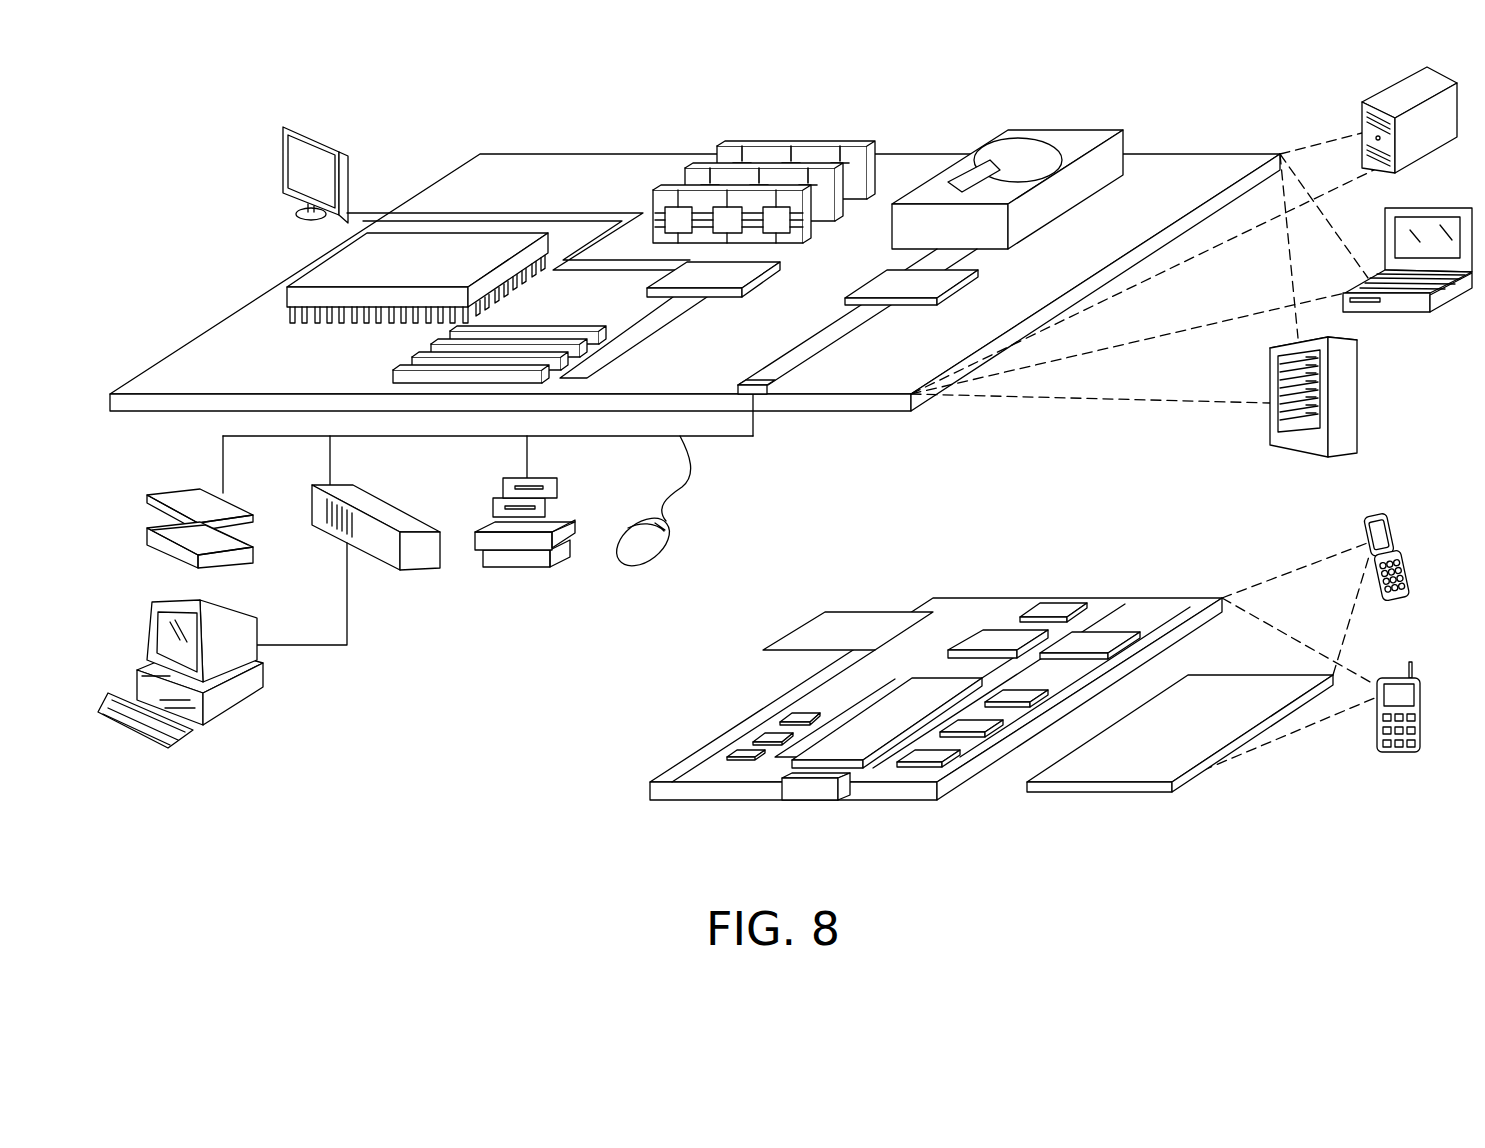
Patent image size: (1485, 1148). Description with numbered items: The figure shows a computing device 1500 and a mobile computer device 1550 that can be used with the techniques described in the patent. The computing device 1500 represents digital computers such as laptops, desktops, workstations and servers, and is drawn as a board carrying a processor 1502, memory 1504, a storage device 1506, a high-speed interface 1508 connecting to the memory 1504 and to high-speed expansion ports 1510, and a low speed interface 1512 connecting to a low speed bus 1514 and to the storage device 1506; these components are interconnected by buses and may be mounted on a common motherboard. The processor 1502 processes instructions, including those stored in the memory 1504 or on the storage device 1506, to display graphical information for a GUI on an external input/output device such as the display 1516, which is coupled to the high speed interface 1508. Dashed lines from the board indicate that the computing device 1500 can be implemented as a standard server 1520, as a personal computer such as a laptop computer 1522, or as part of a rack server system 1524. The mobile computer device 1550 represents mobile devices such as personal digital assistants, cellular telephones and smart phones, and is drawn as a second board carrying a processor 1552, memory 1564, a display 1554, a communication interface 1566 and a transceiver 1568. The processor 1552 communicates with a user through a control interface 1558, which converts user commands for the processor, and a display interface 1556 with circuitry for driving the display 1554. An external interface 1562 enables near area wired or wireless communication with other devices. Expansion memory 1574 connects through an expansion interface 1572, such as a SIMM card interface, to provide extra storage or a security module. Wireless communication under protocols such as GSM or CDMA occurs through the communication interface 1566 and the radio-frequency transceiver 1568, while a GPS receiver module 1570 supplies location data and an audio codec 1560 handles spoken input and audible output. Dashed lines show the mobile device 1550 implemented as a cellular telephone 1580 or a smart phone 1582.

The computing device 1500 is at (428, 96).
The processor 1502 is at (312, 265).
The memory 1504 is at (798, 148).
The storage device 1506 is at (1052, 127).
The high-speed interface 1508 is at (727, 273).
The high-speed expansion ports 1510 is at (420, 351).
The low speed interface 1512 is at (883, 281).
The low speed bus 1514 is at (760, 377).
The display 1516 is at (286, 117).
The standard server 1520 is at (1385, 96).
The laptop computer 1522 is at (1445, 206).
The rack server system 1524 is at (1360, 396).
The mobile computer device 1550 is at (598, 812).
The processor 1552 is at (855, 730).
The display 1554 is at (1222, 693).
The display interface 1556 is at (942, 753).
The control interface 1558 is at (980, 725).
The audio codec 1560 is at (1022, 693).
The external interface 1562 is at (810, 785).
The memory 1564 is at (762, 733).
The communication interface 1566 is at (997, 632).
The transceiver 1568 is at (1097, 637).
The GPS receiver module 1570 is at (1053, 608).
The expansion interface 1572 is at (916, 610).
The expansion memory 1574 is at (823, 610).
The cellular telephone 1580 is at (1382, 514).
The smart phone 1582 is at (1393, 676).